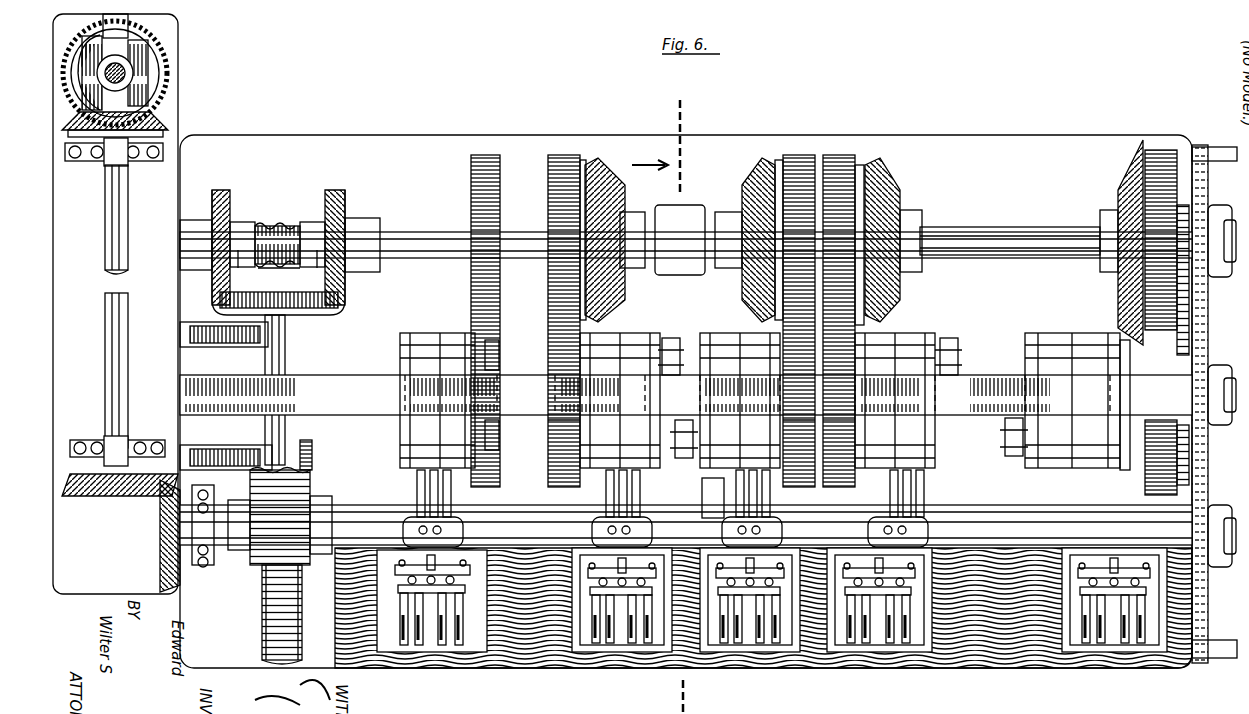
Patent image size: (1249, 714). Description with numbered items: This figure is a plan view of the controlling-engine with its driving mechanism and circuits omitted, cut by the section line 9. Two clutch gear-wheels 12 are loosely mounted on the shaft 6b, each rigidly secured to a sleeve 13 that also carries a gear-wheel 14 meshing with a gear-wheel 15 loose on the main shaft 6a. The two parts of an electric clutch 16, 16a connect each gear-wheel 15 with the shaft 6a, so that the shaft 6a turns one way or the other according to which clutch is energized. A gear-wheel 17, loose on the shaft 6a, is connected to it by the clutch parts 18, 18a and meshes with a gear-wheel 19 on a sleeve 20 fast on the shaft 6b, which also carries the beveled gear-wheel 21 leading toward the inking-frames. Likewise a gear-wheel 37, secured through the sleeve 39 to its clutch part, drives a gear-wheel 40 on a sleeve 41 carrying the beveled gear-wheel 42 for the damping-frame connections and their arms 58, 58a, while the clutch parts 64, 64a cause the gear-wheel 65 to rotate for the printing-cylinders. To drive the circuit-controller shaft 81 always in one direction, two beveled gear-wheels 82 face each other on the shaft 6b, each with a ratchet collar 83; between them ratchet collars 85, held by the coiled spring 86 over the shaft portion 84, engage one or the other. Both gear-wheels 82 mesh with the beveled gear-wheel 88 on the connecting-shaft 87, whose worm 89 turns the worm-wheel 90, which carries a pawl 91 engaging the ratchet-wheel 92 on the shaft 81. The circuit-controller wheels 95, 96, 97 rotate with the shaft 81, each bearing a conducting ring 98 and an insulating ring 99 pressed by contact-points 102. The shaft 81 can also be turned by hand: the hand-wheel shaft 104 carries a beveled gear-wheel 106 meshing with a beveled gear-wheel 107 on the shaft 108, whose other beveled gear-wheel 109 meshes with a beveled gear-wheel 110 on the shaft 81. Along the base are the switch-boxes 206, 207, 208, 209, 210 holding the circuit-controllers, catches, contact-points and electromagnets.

The shaft 6a is at (1225, 425).
The shaft 6b is at (988, 227).
The section line 9 is at (657, 138).
The clutch gear-wheel 12 is at (612, 175).
The sleeve 13 is at (583, 175).
The gear-wheel 14 is at (548, 165).
The gear-wheel 15 is at (548, 470).
The electric clutch part 16 is at (630, 345).
The electric clutch part 16a is at (596, 340).
The gear-wheel 17 is at (840, 478).
The electric clutch part 18 is at (900, 340).
The electric clutch part 18a is at (870, 468).
The gear-wheel 19 is at (838, 155).
The sleeve 20 is at (860, 170).
The beveled gear-wheel 21 is at (885, 165).
The gear-wheel 37 is at (1160, 495).
The sleeve 39 is at (1135, 440).
The gear-wheel 40 is at (1165, 240).
The sleeve 41 is at (1160, 200).
The beveled gear-wheel 42 is at (1118, 165).
The arm 58 is at (1060, 468).
The drum flange 58a is at (1100, 468).
The electric clutch part 64 is at (412, 333).
The electric clutch part 64a is at (445, 333).
The gear-wheel 65 is at (471, 160).
The circuit-controller shaft 81 is at (372, 505).
The beveled gear-wheel 82 is at (215, 200).
The collar 83 is at (238, 225).
The shaft 84 is at (275, 268).
The collar 85 is at (240, 268).
The coiled spring 86 is at (277, 226).
The connecting-shaft 87 is at (285, 365).
The beveled gear-wheel 88 is at (315, 312).
The worm 89 is at (310, 490).
The worm-wheel 90 is at (302, 605).
The pawl 91 is at (300, 615).
The ratchet-wheel 92 is at (312, 455).
The circuit-controller wheel 95 is at (310, 570).
The circuit-controller wheel 96 is at (735, 480).
The circuit-controller wheel 97 is at (417, 480).
The ring 98 is at (438, 497).
The ring 99 is at (417, 503).
The contact-point 102 is at (945, 530).
The shaft 104 is at (123, 68).
The beveled gear-wheel 106 is at (168, 73).
The beveled gear-wheel 107 is at (160, 118).
The shaft 108 is at (108, 226).
The beveled gear-wheel 109 is at (115, 496).
The beveled gear-wheel 110 is at (158, 555).
The switch-box 206 is at (437, 652).
The switch-box 207 is at (628, 652).
The switch-box 208 is at (760, 652).
The switch-box 209 is at (898, 652).
The switch-box 210 is at (1125, 652).